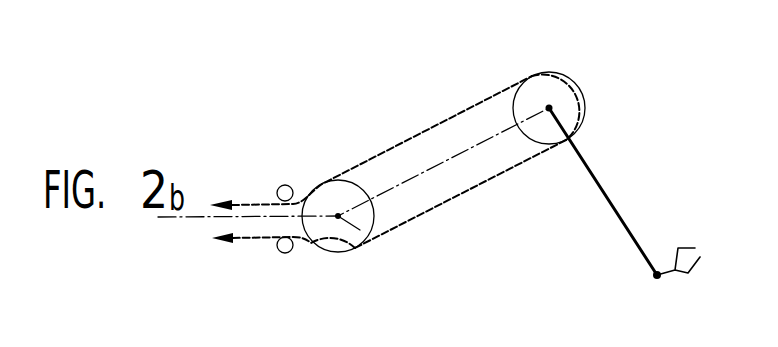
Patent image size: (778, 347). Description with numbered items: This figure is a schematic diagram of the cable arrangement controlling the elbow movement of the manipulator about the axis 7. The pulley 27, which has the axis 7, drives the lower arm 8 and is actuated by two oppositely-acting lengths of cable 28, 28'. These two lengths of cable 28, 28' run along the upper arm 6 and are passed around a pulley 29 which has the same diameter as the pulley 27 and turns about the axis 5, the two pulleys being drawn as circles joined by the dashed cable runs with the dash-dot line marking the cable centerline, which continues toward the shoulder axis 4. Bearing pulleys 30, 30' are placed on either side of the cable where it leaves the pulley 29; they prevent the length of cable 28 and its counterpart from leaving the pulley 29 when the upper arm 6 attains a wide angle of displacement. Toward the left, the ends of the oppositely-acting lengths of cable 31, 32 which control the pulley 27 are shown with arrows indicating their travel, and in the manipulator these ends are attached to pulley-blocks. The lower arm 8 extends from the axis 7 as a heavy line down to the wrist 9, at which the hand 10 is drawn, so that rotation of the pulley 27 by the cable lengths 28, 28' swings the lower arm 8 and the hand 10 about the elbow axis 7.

The axis 4 is at (198, 218).
The axis 5 is at (338, 216).
The upper arm 6 is at (405, 145).
The axis 7 is at (549, 108).
The lower arm 8 is at (593, 173).
The wrist 9 is at (653, 277).
The hand 10 is at (668, 268).
The pulley 27 is at (533, 90).
The length of cable 28 is at (382, 140).
The length of cable 28' is at (460, 195).
The pulley 29 is at (355, 227).
The bearing pulley 30 is at (295, 170).
The bearing pulley 30' is at (271, 271).
The length of cable 31 is at (238, 204).
The length of cable 32 is at (238, 240).